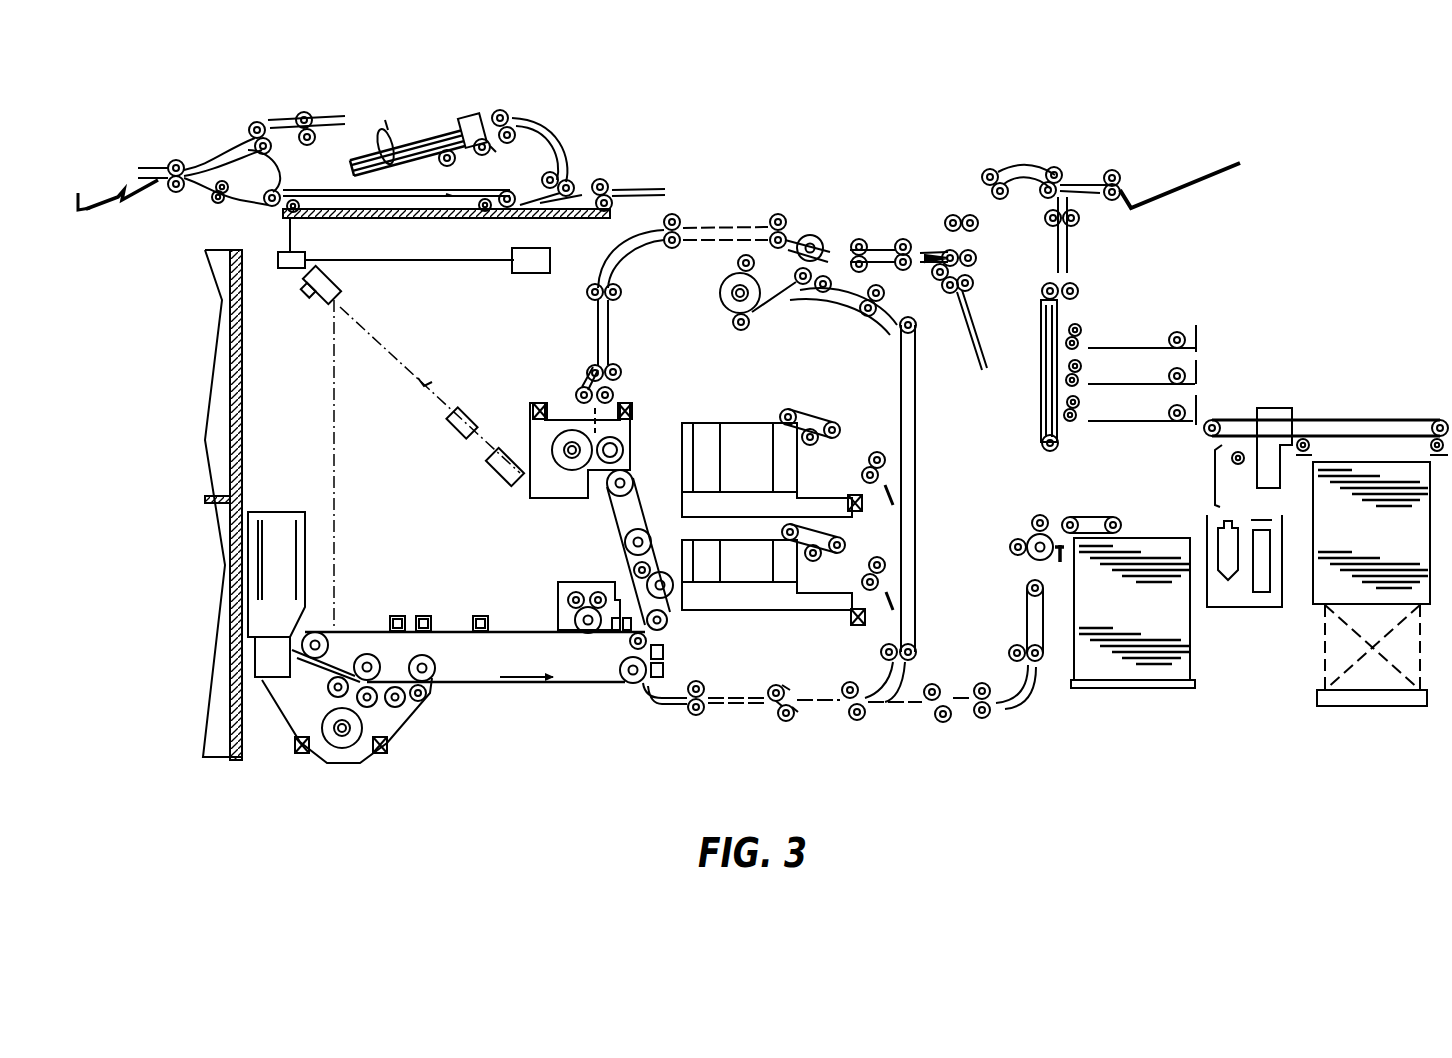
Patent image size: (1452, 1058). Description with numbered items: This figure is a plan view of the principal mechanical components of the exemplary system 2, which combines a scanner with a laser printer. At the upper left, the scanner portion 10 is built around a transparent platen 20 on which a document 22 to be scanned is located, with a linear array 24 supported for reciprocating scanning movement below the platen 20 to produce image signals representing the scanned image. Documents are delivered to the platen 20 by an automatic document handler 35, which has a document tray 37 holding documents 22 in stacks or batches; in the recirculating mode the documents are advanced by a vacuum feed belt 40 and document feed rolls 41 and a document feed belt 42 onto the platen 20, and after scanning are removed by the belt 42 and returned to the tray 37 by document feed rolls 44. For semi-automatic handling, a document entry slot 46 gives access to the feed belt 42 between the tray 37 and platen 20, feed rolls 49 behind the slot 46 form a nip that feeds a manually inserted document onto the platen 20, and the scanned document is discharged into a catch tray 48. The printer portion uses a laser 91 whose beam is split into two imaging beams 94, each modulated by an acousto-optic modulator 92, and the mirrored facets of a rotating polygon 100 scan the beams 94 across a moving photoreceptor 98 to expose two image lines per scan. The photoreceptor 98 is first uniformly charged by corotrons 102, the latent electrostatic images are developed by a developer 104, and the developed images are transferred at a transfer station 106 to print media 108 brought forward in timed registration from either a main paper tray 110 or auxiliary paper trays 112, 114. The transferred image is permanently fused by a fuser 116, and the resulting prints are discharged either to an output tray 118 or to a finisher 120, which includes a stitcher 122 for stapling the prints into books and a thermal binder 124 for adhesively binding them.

The system 2 is at (796, 138).
The sheet feeder 10 is at (204, 134).
The transparent platen 20 is at (440, 222).
The document 22 is at (384, 112).
The linear array 24 is at (282, 252).
The automatic document handler 35 is at (411, 122).
The document tray 37 is at (388, 164).
The vacuum feed belt 40 is at (494, 150).
The document feed rolls 41 is at (510, 120).
The document feed belt 42 is at (450, 192).
The document feed rolls 44 is at (307, 147).
The document entry slot 46 is at (630, 185).
The catch tray 48 is at (148, 190).
The feed rolls 49 is at (600, 178).
The laser 91 is at (488, 478).
The acousto-optic modulator 92 is at (472, 420).
The imaging beams 94 is at (442, 376).
The photoreceptor 98 is at (510, 630).
The rotating polygon 100 is at (325, 300).
The corotrons 102 is at (482, 618).
The developer 104 is at (410, 722).
The transfer station 106 is at (634, 706).
The print media 108 is at (1250, 646).
The main paper tray 110 is at (1118, 688).
The auxiliary paper tray 112 is at (736, 612).
The auxiliary paper tray 114 is at (737, 425).
The fuser 116 is at (644, 432).
The output tray 118 is at (1213, 177).
The finisher 120 is at (1251, 350).
The stitcher 122 is at (1196, 360).
The thermal binder 124 is at (1351, 415).